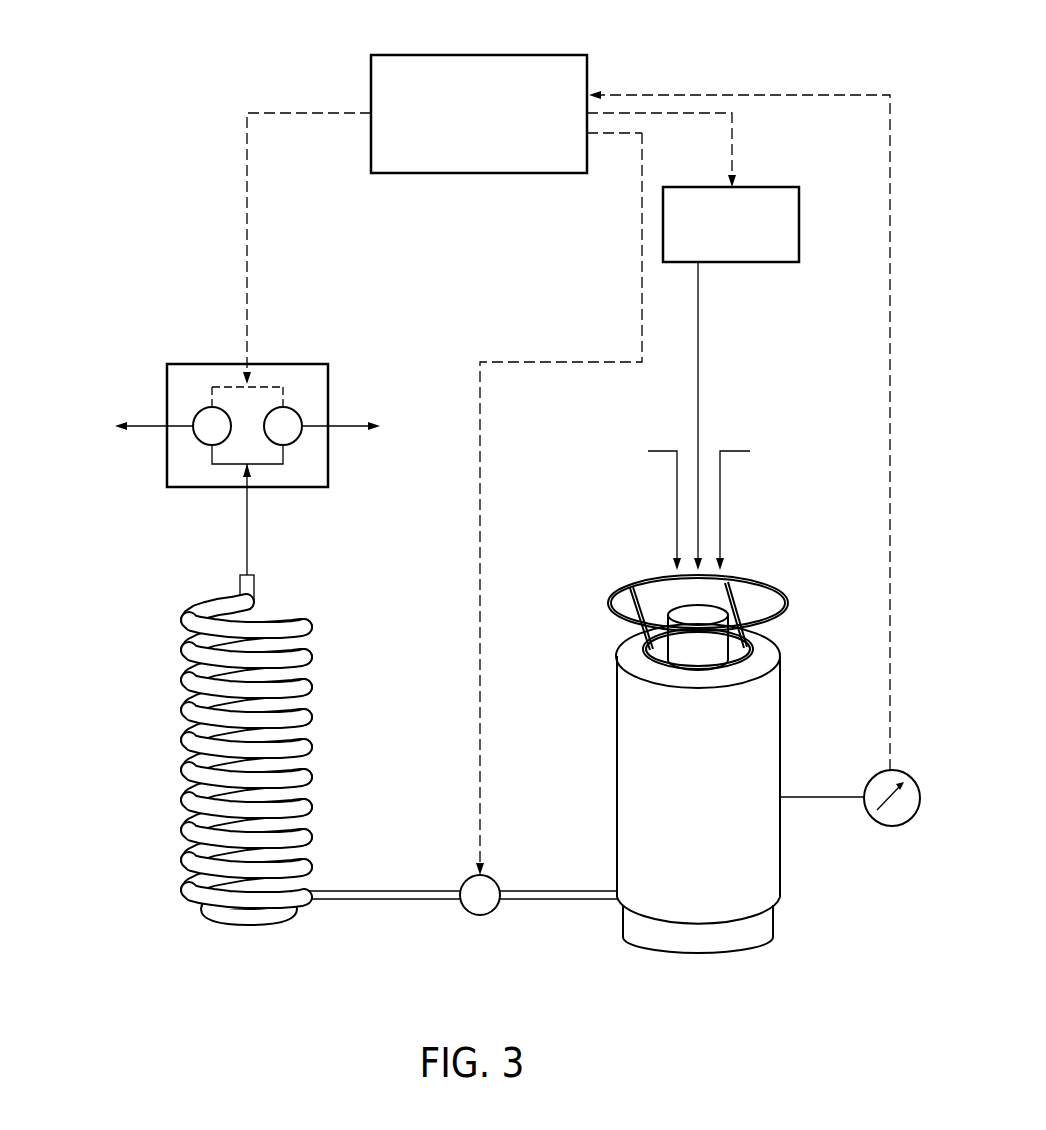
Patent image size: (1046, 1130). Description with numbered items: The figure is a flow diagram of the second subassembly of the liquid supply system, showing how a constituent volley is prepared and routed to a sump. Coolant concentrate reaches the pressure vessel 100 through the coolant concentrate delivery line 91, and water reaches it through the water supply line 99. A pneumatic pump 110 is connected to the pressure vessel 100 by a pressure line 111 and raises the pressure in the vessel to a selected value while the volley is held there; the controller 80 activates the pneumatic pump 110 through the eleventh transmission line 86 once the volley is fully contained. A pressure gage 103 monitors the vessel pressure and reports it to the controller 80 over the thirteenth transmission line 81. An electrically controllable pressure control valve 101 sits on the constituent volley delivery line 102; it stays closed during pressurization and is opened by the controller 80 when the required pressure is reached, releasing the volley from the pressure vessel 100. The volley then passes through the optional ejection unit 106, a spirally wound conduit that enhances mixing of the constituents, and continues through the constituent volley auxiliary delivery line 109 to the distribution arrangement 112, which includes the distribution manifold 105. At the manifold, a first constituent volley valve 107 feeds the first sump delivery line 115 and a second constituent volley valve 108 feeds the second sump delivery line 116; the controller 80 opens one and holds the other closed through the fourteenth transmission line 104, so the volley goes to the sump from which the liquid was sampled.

The controller 80 is at (478, 55).
The thirteenth transmission line 81 is at (735, 95).
The eleventh transmission line 86 is at (733, 150).
The pneumatic pump 110 is at (800, 225).
The pressure line 111 is at (698, 355).
The coolant concentrate delivery line 91 is at (677, 512).
The water supply line 99 is at (720, 512).
The pressure vessel 100 is at (617, 760).
The pressure gage 103 is at (890, 828).
The constituent volley delivery line 102 is at (385, 892).
The pressure control valve 101 is at (478, 915).
The fourteenth transmission line 104 is at (248, 235).
The distribution manifold 105 is at (283, 364).
The first constituent volley valve 107 is at (197, 440).
The second constituent volley valve 108 is at (296, 440).
The distribution arrangement 112 is at (247, 375).
The first sump delivery line 115 is at (145, 422).
The second sump delivery line 116 is at (350, 422).
The constituent volley auxiliary delivery line 109 is at (247, 545).
The ejection unit 106 is at (313, 715).